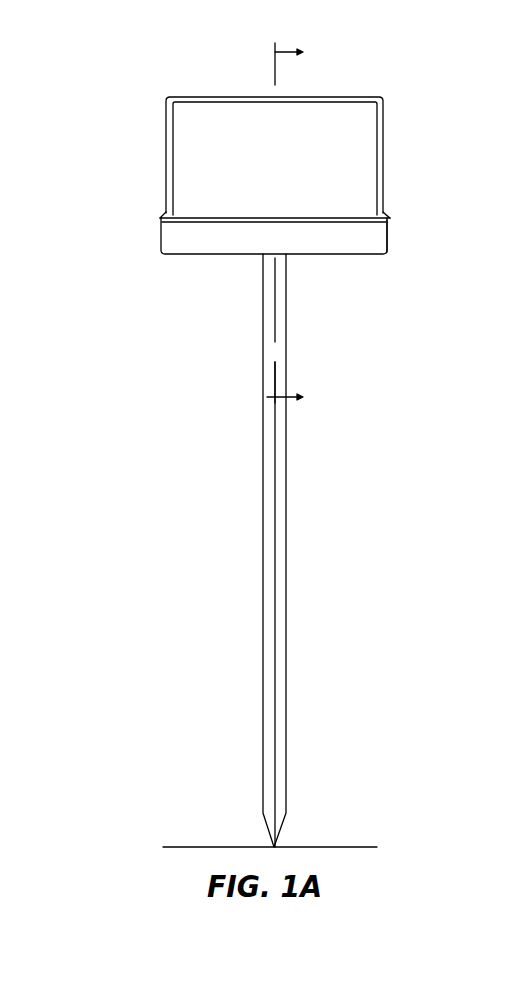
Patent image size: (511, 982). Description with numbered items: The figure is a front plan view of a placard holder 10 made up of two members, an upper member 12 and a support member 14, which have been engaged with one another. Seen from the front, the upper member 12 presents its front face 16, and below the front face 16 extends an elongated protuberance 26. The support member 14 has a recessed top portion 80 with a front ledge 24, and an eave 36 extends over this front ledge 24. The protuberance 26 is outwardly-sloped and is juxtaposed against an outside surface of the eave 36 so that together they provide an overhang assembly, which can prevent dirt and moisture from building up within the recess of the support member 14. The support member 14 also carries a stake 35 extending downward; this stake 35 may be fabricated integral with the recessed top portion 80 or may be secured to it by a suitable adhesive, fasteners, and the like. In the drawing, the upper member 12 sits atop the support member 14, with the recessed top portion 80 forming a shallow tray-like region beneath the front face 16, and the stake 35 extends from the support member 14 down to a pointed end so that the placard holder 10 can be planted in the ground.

The placard holder 10 is at (133, 74).
The upper member 12 is at (403, 130).
The front face 16 is at (312, 168).
The elongated protuberance 26 is at (187, 215).
The front ledge 24 is at (335, 247).
The eave 36 is at (204, 222).
The recessed top portion 80 is at (406, 223).
The support member 14 is at (364, 282).
The stake 35 is at (286, 342).